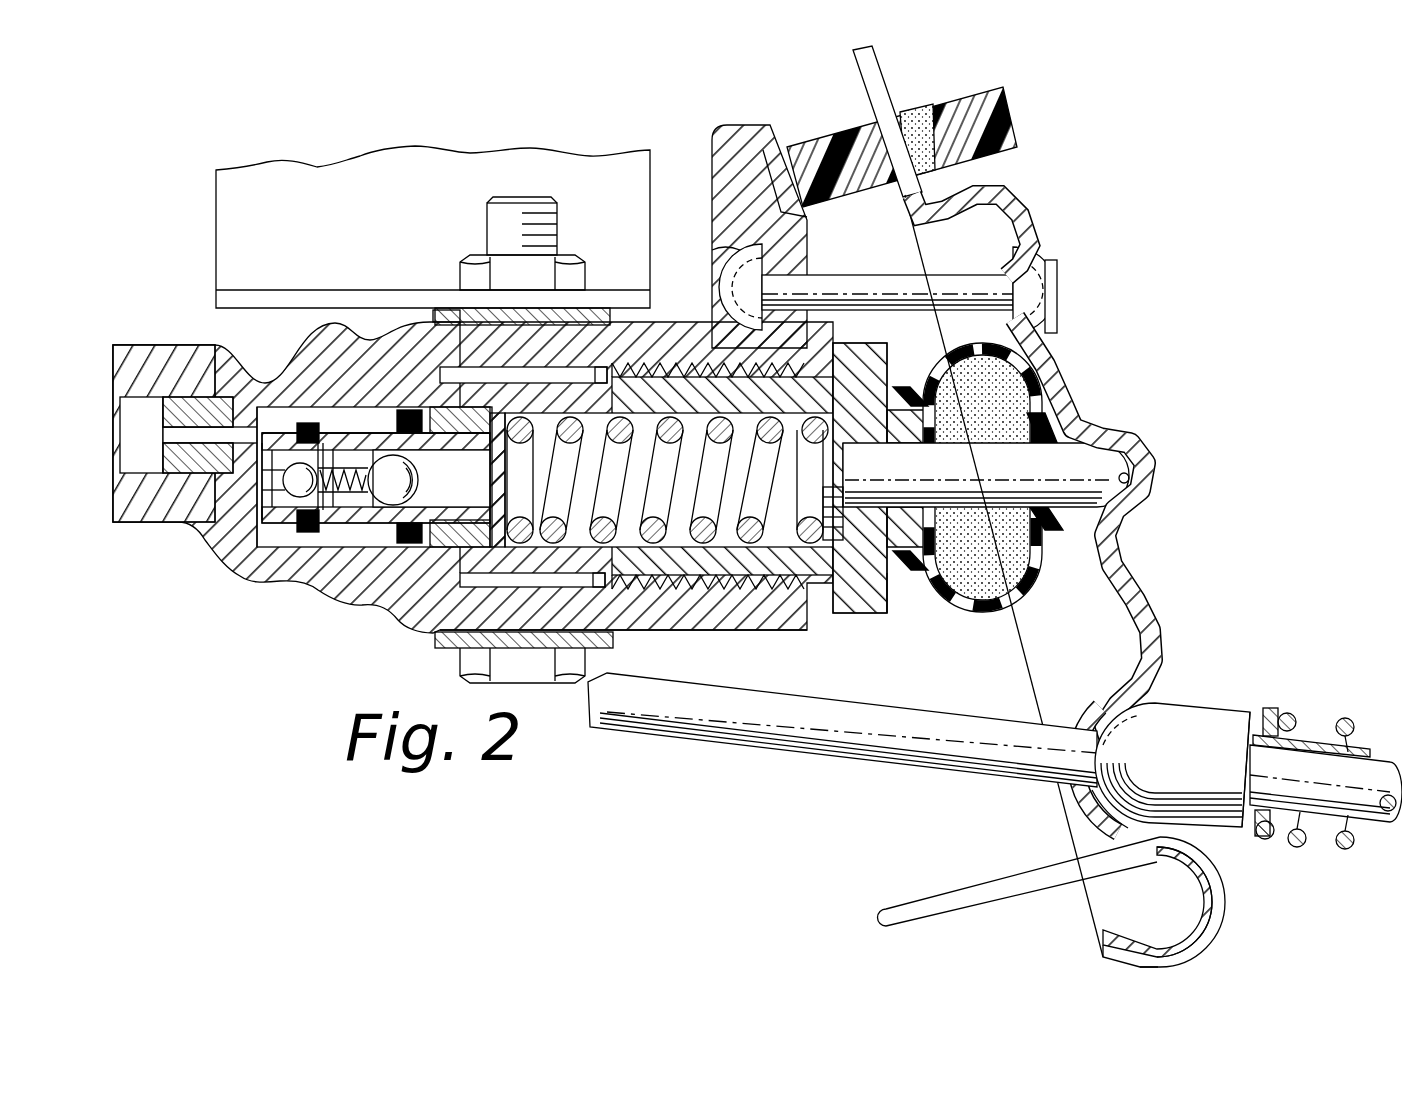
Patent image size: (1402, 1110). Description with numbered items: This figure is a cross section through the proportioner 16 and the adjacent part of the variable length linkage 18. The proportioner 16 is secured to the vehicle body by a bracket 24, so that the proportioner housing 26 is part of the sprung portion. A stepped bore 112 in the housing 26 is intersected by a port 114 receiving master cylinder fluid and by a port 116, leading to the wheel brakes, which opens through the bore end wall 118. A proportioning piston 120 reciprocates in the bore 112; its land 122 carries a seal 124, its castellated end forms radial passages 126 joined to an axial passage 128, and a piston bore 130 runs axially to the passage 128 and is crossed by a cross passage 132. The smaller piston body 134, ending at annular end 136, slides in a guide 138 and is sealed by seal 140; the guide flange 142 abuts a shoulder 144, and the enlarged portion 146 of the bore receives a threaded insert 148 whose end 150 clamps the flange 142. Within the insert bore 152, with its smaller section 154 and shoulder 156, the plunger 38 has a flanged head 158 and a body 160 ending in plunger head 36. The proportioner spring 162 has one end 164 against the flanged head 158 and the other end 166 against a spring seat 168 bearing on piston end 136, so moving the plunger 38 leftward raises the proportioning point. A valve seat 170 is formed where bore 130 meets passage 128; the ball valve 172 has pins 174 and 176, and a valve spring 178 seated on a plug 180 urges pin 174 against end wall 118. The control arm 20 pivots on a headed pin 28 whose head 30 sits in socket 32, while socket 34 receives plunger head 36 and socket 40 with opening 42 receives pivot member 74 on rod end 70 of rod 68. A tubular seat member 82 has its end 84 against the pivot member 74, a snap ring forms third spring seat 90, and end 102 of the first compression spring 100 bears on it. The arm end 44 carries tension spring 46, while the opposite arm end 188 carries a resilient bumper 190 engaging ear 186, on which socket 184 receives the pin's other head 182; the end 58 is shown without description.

The proportioner 16 is at (152, 340).
The variable length linkage 18 is at (1362, 735).
The control arm 20 is at (1135, 590).
The bracket 24 is at (216, 195).
The proportioner housing 26 is at (125, 376).
The headed pin 28 is at (850, 282).
The pin head 30 is at (1033, 293).
The socket 32 is at (1030, 262).
The socket 34 is at (1123, 477).
The plunger head 36 is at (1117, 457).
The plunger 38 is at (993, 467).
The socket 40 is at (1117, 717).
The opening 42 is at (1090, 787).
The extreme end of arm 44 is at (1113, 942).
The tension spring 46 is at (947, 900).
The cylinder end 58 is at (1232, 712).
The rod 68 is at (1380, 810).
The rod end 70 is at (627, 723).
The pivot member 74 is at (1177, 727).
The tubular spring seat member 82 is at (1342, 850).
The end of seat member 84 is at (1272, 708).
The third spring seat 90 is at (1262, 840).
The first compression spring 100 is at (1300, 848).
The spring end 102 is at (1292, 714).
The bore 112 is at (600, 600).
The port 114 is at (370, 412).
The port 116 is at (135, 447).
The bore end wall 118 is at (248, 460).
The proportioning piston 120 is at (288, 535).
The land 122 is at (300, 465).
The seal 124 is at (308, 540).
The radial passages 126 is at (282, 440).
The axial passage 128 is at (273, 490).
The piston bore 130 is at (322, 440).
The cross passage 132 is at (340, 445).
The piston body 134 is at (422, 432).
The annular end 136 is at (512, 362).
The guide 138 is at (470, 400).
The seal 140 is at (402, 412).
The flange 142 is at (456, 572).
The shoulder 144 is at (458, 545).
The enlarged portion of bore 146 is at (512, 590).
The threaded insert 148 is at (562, 590).
The insert end 150 is at (465, 395).
The insert bore 152 is at (672, 545).
The smaller diameter section 154 is at (923, 513).
The shoulder 156 is at (870, 388).
The flanged head 158 is at (883, 573).
The plunger body 160 is at (927, 455).
The proportioner spring 162 is at (666, 463).
The spring end 164 is at (835, 452).
The spring end 166 is at (518, 400).
The spring seat 168 is at (548, 402).
The valve seat 170 is at (287, 497).
The valve 172 is at (292, 508).
The valve pin 174 is at (287, 483).
The valve pin 176 is at (405, 495).
The valve spring 178 is at (345, 515).
The plug 180 is at (395, 520).
The head 182 is at (727, 283).
The socket 184 is at (727, 260).
The ear 186 is at (723, 140).
The arm end 188 is at (882, 115).
The resilient bumper 190 is at (1013, 128).